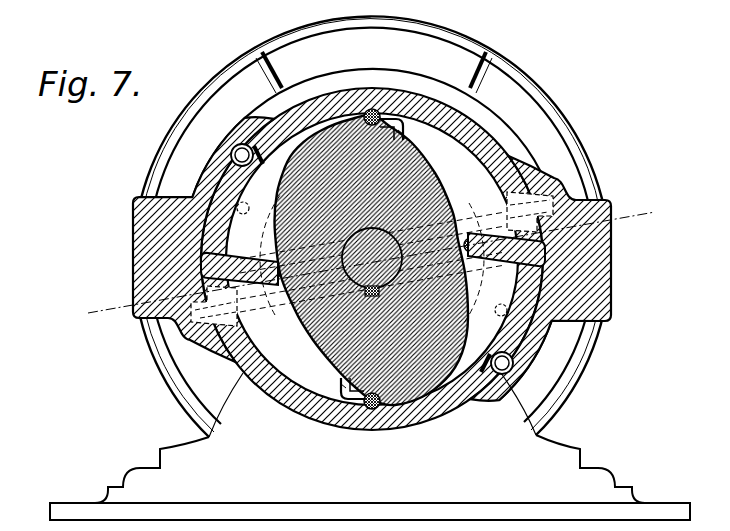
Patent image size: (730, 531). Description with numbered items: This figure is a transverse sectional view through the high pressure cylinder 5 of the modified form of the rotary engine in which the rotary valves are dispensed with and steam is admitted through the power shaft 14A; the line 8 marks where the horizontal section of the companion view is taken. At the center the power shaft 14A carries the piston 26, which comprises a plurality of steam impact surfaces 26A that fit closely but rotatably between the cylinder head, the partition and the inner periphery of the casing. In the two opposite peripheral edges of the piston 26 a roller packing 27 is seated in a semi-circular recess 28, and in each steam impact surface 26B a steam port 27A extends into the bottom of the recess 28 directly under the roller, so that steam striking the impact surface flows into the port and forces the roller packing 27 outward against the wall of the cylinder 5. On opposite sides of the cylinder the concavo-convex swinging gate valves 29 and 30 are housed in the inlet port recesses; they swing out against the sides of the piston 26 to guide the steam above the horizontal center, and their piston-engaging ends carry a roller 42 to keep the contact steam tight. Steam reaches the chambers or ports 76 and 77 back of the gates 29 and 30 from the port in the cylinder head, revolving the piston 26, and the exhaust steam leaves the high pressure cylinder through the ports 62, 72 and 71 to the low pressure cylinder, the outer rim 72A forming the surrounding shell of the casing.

The shaft 5 is at (395, 223).
The section line 8— 8 is at (368, 263).
The power shaft 14A is at (440, 187).
The piston 26 is at (330, 372).
The steam impact surfaces 26A is at (282, 279).
The steam impact surface 26B is at (383, 260).
The roller packing 27 is at (376, 110).
The steam ports 27A is at (402, 140).
The semi-circular recesses 28 is at (351, 104).
The swinging valve 29 is at (239, 264).
The swinging valve 30 is at (506, 255).
The roller 42 is at (372, 259).
The port of the high pressure cylinder 62 is at (256, 168).
The ports 71 is at (214, 183).
The ports 72 is at (235, 152).
The outer rim 72A is at (574, 123).
The chamber or port 76 is at (178, 337).
The chamber or port 77 is at (563, 182).